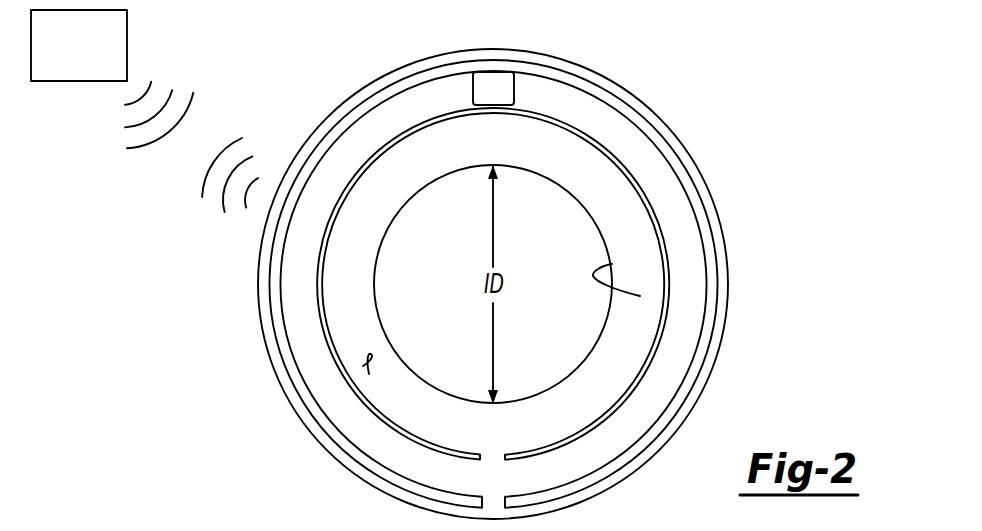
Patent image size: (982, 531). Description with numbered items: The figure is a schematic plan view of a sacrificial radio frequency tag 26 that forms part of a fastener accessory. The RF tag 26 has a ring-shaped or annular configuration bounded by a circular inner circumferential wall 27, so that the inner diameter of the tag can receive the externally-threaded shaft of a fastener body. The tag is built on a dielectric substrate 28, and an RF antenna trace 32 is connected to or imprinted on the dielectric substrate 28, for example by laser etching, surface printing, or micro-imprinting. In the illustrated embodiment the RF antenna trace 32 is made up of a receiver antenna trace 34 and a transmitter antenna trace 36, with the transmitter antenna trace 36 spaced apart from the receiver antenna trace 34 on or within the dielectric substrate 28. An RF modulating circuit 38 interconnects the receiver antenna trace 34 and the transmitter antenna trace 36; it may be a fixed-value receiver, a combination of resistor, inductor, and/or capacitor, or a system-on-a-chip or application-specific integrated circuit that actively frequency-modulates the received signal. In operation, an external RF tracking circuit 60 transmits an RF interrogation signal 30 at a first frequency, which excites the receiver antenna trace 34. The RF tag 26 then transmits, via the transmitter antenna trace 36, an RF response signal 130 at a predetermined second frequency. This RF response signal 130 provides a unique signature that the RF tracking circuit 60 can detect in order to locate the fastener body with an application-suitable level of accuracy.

The sacrificial radio frequency (RF) tag 26 is at (805, 50).
The inner circumferential wall 27 is at (640, 296).
The dielectric substrate 28 is at (363, 366).
The RF interrogation signal 30 is at (127, 148).
The RF antenna trace 32 is at (515, 281).
The receiver (Rx) antenna trace 34 is at (606, 102).
The transmitter (Tx) antenna trace 36 is at (657, 206).
The RF modulating circuit 38 is at (498, 88).
The RF tracking circuit 60 is at (91, 57).
The RF response signal 130 is at (202, 196).